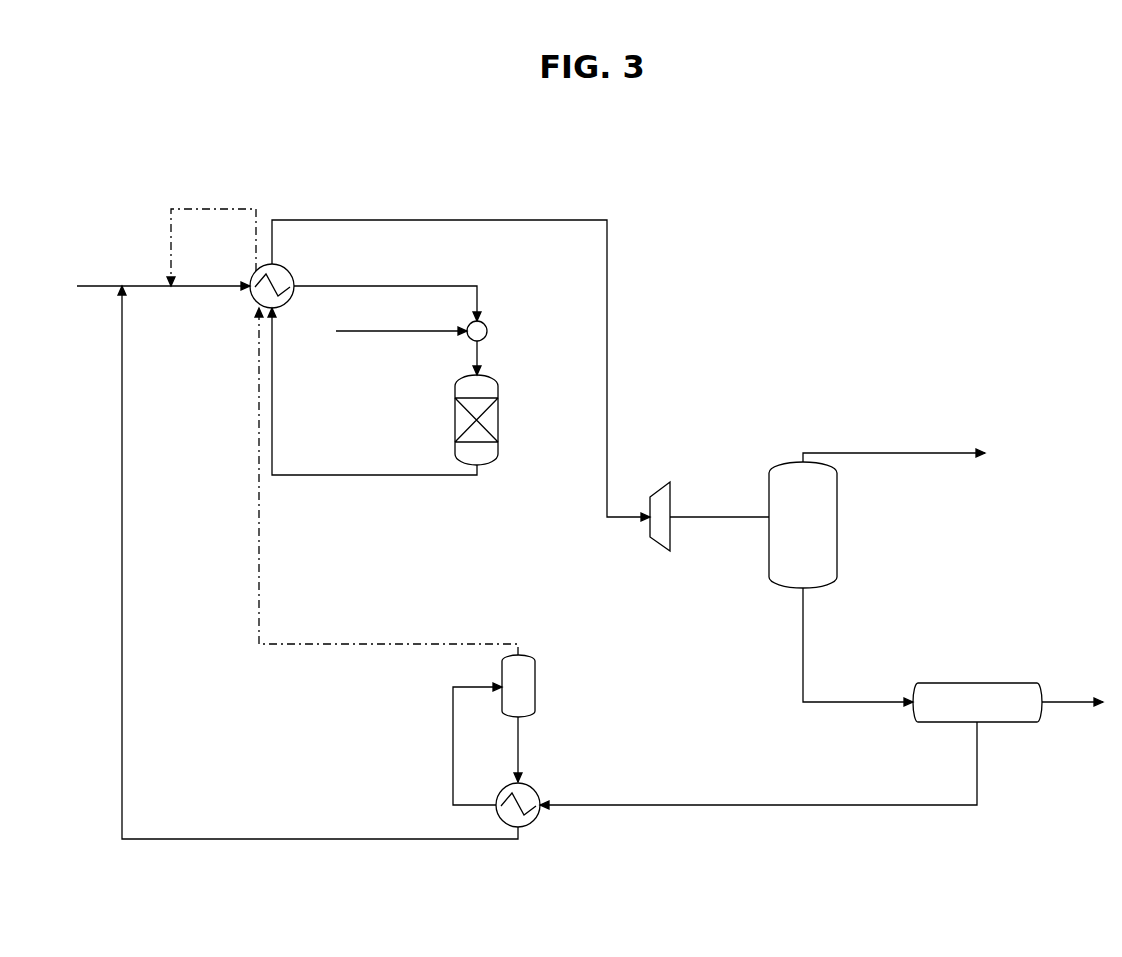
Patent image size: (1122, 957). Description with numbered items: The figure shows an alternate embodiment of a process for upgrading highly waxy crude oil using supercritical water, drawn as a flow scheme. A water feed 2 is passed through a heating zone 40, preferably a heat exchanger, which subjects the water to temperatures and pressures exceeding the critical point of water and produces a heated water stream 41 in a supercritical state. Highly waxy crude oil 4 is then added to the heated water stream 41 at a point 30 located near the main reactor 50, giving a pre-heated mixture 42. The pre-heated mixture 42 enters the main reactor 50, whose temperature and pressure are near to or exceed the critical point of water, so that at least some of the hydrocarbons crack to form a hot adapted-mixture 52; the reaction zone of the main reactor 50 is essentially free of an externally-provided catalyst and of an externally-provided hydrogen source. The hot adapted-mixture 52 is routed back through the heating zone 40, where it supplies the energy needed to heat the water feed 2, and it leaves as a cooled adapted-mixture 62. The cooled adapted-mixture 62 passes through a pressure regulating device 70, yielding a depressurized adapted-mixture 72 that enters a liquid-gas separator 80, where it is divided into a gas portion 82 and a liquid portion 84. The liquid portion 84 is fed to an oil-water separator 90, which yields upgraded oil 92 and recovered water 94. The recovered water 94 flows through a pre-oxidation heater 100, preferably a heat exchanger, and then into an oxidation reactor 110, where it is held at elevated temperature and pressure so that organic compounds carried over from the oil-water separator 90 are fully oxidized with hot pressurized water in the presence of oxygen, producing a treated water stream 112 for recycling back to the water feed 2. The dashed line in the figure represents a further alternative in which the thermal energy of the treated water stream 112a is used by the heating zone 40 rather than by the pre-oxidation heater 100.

The water feed 2 is at (143, 286).
The highly waxy crude oil 4 is at (398, 331).
The point 30 is at (487, 327).
The heating zone 40 is at (255, 283).
The heated water stream 41 is at (390, 285).
The pre-heated mixture 42 is at (480, 356).
The main reactor 50 is at (500, 428).
The hot adapted-mixture 52 is at (377, 475).
The cooled adapted-mixture 62 is at (607, 309).
The pressure regulating device 70 is at (652, 497).
The depressurized adapted-mixture 72 is at (747, 517).
The liquid-gas separator 80 is at (803, 525).
The gas portion 82 is at (910, 453).
The liquid portion 84 is at (878, 702).
The oil-water separator 90 is at (977, 702).
The upgraded oil 92 is at (1097, 702).
The recovered water 94 is at (790, 805).
The pre-oxidation heater 100 is at (540, 797).
The oxidation reactor 110 is at (537, 687).
The treated water stream 112 is at (352, 839).
The treated water stream 112a is at (420, 644).